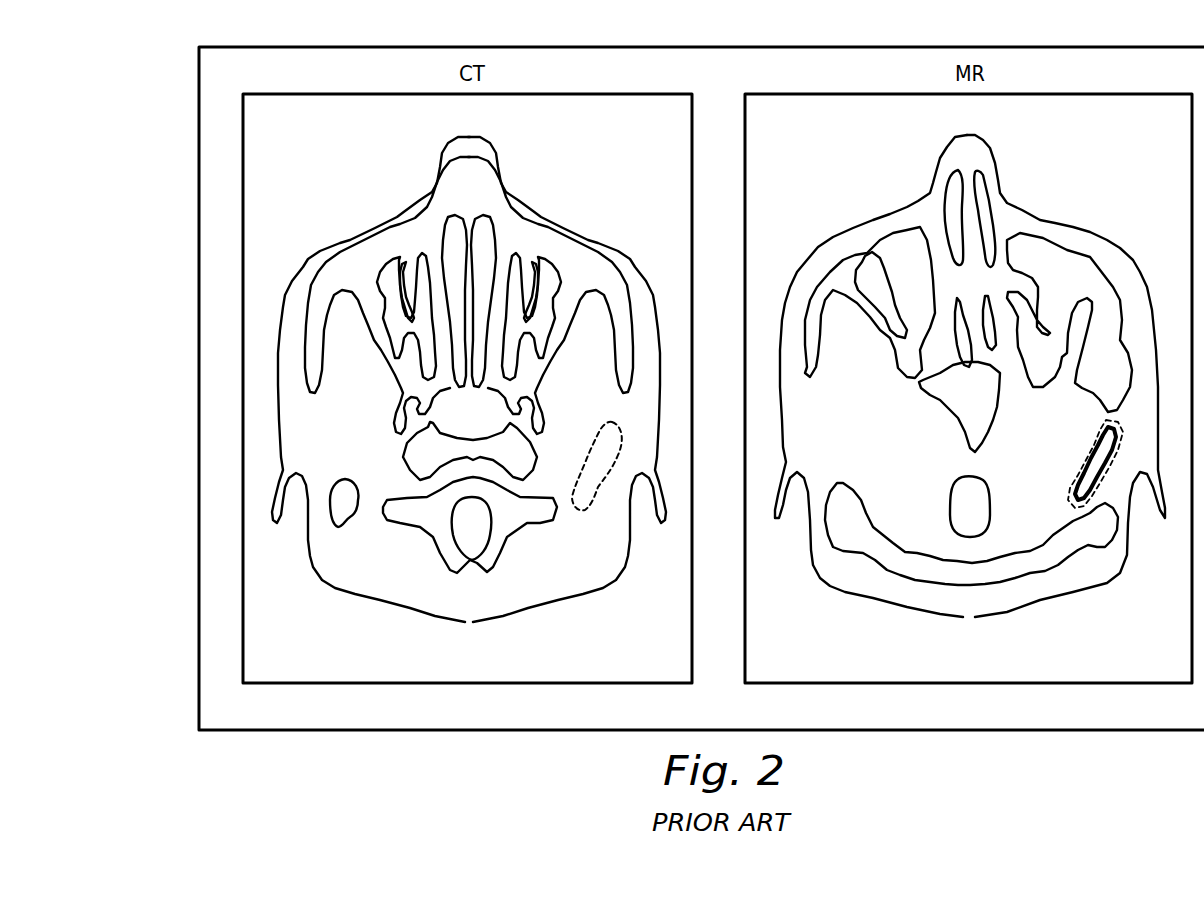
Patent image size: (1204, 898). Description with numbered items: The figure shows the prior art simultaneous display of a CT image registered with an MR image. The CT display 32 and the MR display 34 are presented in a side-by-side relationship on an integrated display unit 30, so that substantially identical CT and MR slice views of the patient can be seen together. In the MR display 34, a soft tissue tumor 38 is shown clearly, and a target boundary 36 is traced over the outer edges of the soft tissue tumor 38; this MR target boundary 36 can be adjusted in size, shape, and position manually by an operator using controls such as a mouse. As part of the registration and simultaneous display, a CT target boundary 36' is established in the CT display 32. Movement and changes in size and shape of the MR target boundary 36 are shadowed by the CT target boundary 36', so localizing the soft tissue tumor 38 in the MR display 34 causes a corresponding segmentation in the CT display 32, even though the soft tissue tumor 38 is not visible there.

The integrated display unit 30 is at (750, 47).
The CT display 32 is at (372, 645).
The MR display 34 is at (1095, 642).
The target boundary 36 is at (1072, 459).
The CT target boundary 36' is at (590, 446).
The soft tissue tumor 38 is at (1043, 488).